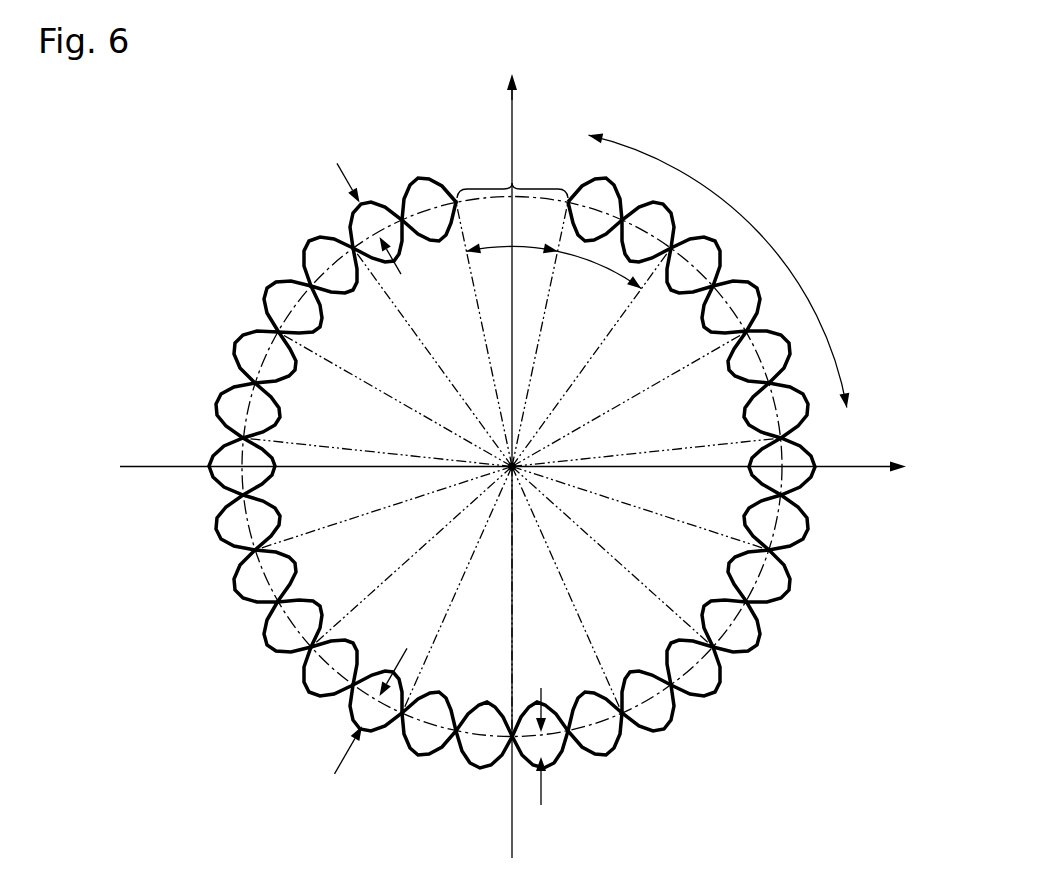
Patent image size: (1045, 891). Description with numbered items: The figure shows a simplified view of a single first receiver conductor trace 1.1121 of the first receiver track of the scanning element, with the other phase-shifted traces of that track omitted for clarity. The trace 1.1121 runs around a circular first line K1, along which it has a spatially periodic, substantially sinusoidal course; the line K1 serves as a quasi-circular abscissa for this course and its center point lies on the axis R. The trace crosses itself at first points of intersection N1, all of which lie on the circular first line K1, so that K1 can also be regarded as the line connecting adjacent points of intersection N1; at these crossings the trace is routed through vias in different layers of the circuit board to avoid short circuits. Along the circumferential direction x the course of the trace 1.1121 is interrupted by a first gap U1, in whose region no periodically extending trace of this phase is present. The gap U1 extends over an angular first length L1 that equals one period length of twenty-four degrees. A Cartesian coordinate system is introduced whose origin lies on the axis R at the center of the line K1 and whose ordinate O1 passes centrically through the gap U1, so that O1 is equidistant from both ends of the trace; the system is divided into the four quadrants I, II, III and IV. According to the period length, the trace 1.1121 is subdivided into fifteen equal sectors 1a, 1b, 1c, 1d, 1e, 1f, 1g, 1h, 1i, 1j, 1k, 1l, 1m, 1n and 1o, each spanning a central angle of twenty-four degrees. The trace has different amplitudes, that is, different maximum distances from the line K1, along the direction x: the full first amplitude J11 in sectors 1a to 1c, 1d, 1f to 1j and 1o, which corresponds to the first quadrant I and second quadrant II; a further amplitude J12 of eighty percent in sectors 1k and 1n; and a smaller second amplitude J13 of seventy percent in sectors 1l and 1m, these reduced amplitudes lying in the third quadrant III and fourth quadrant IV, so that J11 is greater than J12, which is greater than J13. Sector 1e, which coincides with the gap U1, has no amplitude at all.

The first receiver conductor trace 1.1121 is at (268, 291).
The circular first line K1 is at (247, 519).
The first points of intersection N1 is at (457, 198).
The first amplitude J11 is at (369, 210).
The further amplitude J12 is at (351, 711).
The second amplitude J13 is at (568, 746).
The first gap U1 is at (512, 171).
The angular first length L1 is at (511, 231).
The circumferential direction x is at (719, 271).
The axis R is at (506, 469).
The ordinate O1 is at (534, 96).
The sector 1a is at (655, 485).
The sector 1b is at (647, 418).
The sector 1c is at (615, 368).
The sector 1d is at (557, 335).
The sector 1e is at (512, 325).
The sector 1f is at (452, 335).
The sector 1g is at (404, 370).
The sector 1h is at (372, 420).
The sector 1i is at (365, 490).
The sector 1j is at (388, 545).
The sector 1k is at (427, 588).
The sector 1l is at (483, 617).
The sector 1m is at (548, 618).
The sector 1n is at (592, 573).
The sector 1o is at (635, 540).
The first quadrant I is at (668, 340).
The second quadrant II is at (351, 345).
The third quadrant III is at (354, 632).
The fourth quadrant IV is at (678, 630).